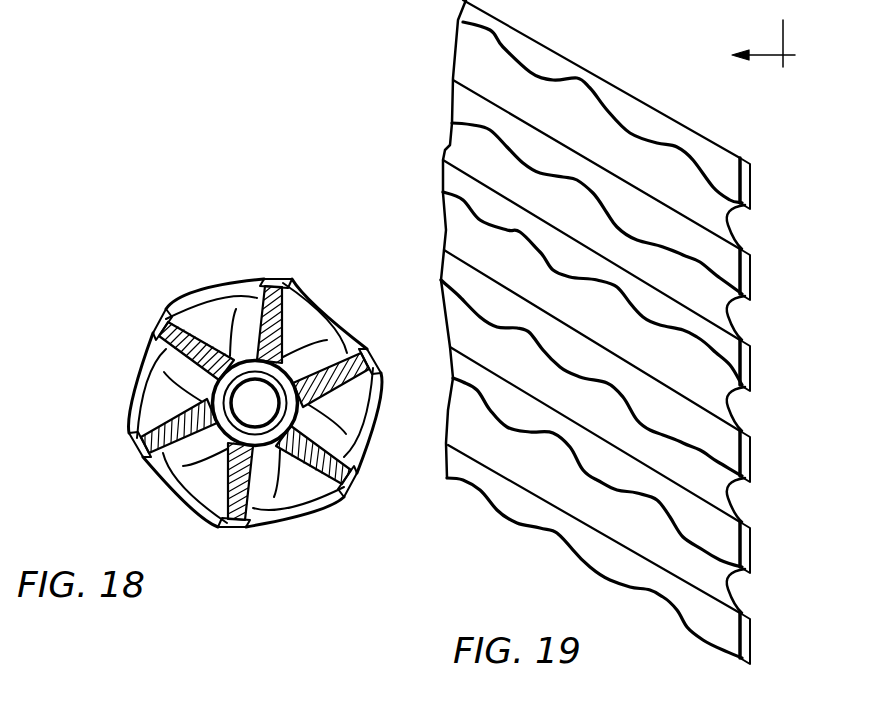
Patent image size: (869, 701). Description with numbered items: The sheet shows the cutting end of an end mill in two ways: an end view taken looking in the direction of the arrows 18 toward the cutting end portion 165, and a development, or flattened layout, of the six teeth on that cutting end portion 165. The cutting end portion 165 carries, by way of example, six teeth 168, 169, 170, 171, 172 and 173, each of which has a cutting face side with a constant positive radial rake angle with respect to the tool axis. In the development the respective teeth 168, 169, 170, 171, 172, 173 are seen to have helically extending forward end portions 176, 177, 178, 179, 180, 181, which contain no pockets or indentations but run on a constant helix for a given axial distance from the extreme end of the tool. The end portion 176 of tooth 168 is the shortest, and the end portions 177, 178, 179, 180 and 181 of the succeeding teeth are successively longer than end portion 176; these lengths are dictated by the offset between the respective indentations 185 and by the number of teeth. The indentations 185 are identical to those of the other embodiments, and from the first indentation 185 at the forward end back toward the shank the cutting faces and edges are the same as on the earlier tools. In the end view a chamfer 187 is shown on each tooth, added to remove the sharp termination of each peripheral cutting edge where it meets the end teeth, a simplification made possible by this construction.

In FIG. 19, the arrows 18— 18 is at (749, 43).
In FIG. 19, the cutting end portion 165 is at (450, 144).
In FIG. 18, the tooth 168 is at (160, 322).
In FIG. 19, the tooth 168 is at (630, 100).
In FIG. 18, the tooth 169 is at (322, 292).
In FIG. 19, the tooth 169 is at (615, 557).
In FIG. 18, the tooth 170 is at (377, 367).
In FIG. 19, the tooth 170 is at (597, 453).
In FIG. 18, the tooth 171 is at (357, 483).
In FIG. 19, the tooth 171 is at (580, 343).
In FIG. 18, the tooth 172 is at (243, 533).
In FIG. 19, the tooth 172 is at (563, 237).
In FIG. 18, the tooth 173 is at (140, 442).
In FIG. 19, the tooth 173 is at (555, 155).
In FIG. 19, the forward end portion 176 is at (727, 180).
In FIG. 19, the forward end portion 177 is at (713, 627).
In FIG. 19, the forward end portion 178 is at (715, 532).
In FIG. 19, the forward end portion 179 is at (700, 430).
In FIG. 19, the forward end portion 180 is at (680, 327).
In FIG. 19, the forward end portion 181 is at (663, 247).
In FIG. 19, the indentations 185 is at (565, 540).
In FIG. 18, the chamfer 187 is at (272, 278).